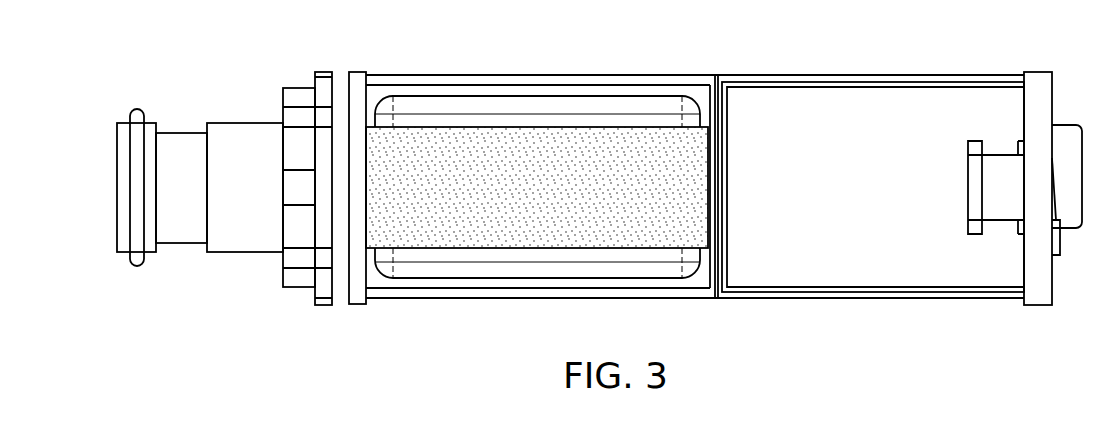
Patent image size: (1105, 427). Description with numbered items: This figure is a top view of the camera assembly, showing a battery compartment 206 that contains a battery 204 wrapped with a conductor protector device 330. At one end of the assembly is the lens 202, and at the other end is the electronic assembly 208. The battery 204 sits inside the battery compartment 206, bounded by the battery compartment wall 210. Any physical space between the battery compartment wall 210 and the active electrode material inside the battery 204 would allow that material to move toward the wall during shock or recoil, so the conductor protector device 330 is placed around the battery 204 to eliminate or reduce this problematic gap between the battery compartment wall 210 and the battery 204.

The lens 202 is at (117, 186).
The battery 204 is at (568, 107).
The battery compartment 206 is at (698, 98).
The electronic assembly 208 is at (820, 103).
The battery compartment wall 210 is at (357, 72).
The conductor protector device 330 is at (443, 237).